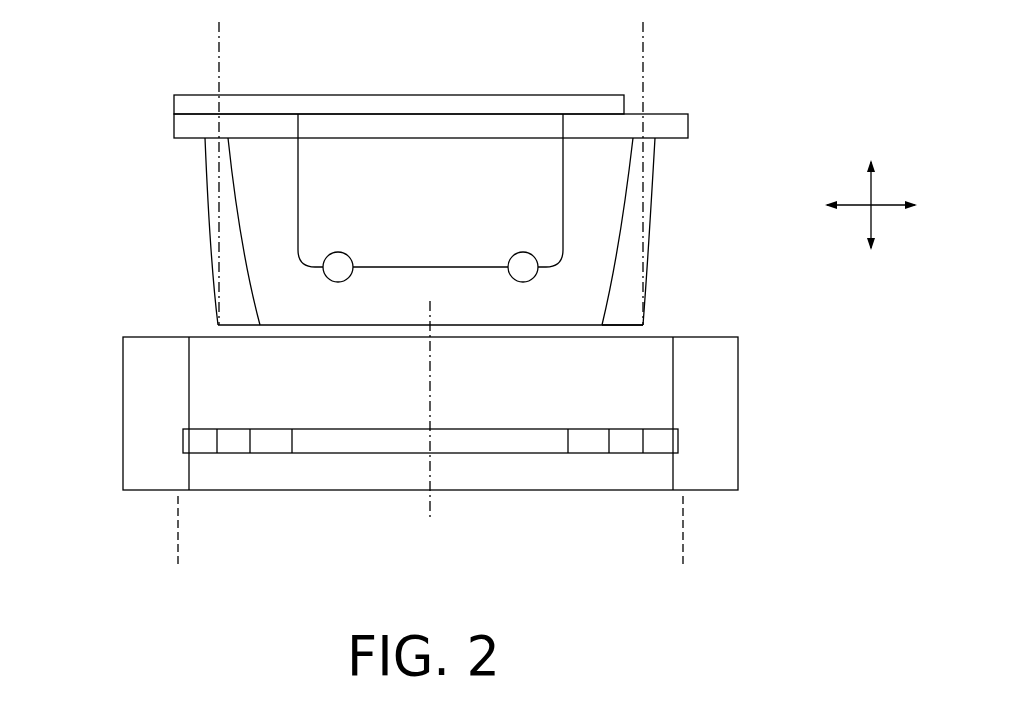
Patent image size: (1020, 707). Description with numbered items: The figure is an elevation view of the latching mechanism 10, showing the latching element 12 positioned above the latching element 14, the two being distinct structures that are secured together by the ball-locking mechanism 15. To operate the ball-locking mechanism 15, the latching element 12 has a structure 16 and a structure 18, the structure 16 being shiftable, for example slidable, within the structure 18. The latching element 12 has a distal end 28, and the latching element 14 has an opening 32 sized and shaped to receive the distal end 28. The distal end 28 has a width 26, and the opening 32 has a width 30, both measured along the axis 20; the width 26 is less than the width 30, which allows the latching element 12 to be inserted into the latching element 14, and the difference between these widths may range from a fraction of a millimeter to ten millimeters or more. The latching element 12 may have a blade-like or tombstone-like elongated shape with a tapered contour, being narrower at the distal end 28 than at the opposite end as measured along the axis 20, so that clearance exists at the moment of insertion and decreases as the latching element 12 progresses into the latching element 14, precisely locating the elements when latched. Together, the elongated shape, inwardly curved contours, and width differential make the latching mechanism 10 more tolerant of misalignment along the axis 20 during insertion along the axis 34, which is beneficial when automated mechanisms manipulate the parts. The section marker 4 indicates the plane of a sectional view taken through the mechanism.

The latching mechanism 10 is at (76, 151).
The latching element 12 is at (652, 212).
The latching element 14 is at (465, 392).
The ball-locking mechanism 15 is at (527, 262).
The structure 16 is at (533, 95).
The structure 18 is at (645, 113).
The axis 20 is at (888, 201).
The width 26 is at (643, 32).
The distal end 28 is at (620, 327).
The width 30 is at (683, 556).
The opening 32 is at (205, 337).
The axis 34 is at (869, 186).
The section line 4- 4 is at (430, 301).